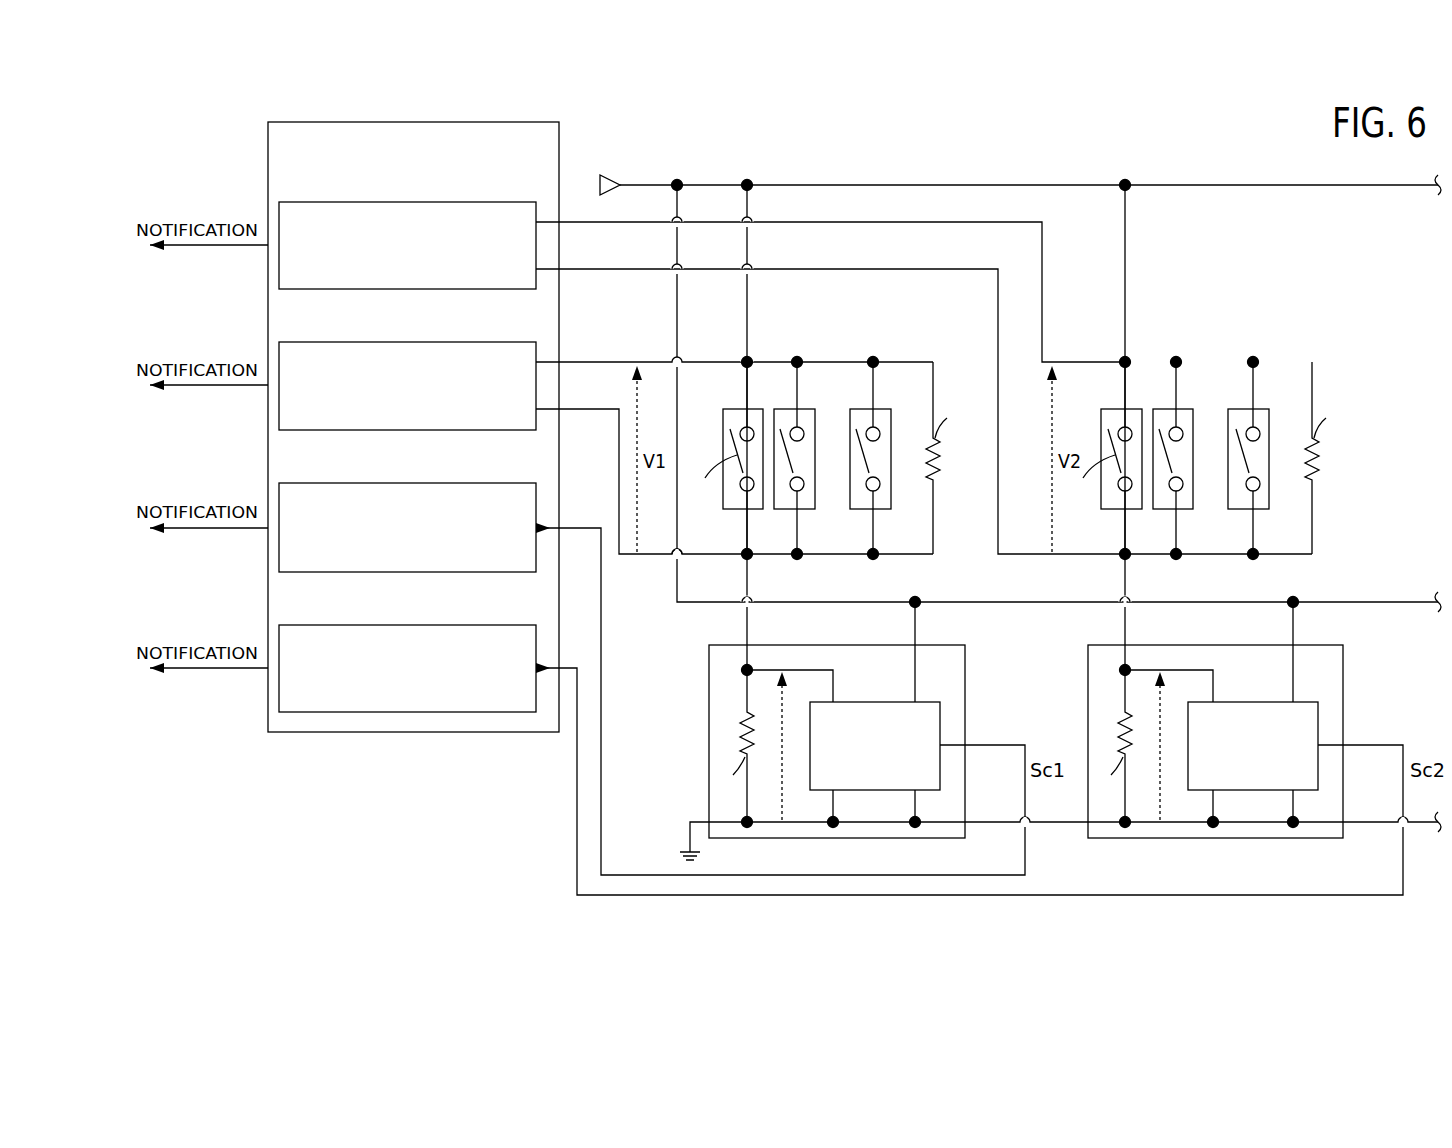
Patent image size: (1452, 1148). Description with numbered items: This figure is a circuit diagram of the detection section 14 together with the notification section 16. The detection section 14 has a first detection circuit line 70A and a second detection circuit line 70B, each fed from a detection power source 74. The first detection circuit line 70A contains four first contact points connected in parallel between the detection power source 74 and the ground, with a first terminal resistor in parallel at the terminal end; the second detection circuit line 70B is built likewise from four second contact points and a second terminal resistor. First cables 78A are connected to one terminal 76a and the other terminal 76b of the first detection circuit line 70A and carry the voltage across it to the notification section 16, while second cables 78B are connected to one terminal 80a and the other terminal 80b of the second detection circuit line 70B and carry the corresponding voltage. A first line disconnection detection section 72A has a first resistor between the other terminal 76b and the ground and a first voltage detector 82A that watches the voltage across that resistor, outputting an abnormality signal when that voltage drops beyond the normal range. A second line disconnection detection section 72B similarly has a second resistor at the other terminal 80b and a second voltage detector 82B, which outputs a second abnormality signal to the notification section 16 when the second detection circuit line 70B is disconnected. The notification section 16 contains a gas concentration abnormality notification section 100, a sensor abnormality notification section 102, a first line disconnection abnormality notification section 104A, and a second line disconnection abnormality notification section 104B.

The notification section 16 is at (322, 121).
The sensor abnormality notification section 102 is at (458, 202).
The gas concentration abnormality notification section 100 is at (458, 342).
The first line disconnection abnormality notification section 104A is at (458, 483).
The second line disconnection abnormality notification section 104B is at (458, 625).
The detection section 14 is at (1188, 174).
The detection power source 74 is at (609, 174).
The first cables 78A is at (591, 357).
The second cables 78B is at (859, 215).
The first detection circuit line 70A is at (835, 445).
The second detection circuit line 70B is at (1211, 445).
The one terminal 76a is at (749, 358).
The other terminal 76b is at (752, 560).
The one terminal 80a is at (1122, 358).
The other terminal 80b is at (1130, 560).
The first line disconnection detection section 72A is at (875, 718).
The second line disconnection detection section 72B is at (1253, 718).
The first voltage detector 82A is at (942, 722).
The second voltage detector 82B is at (1320, 722).